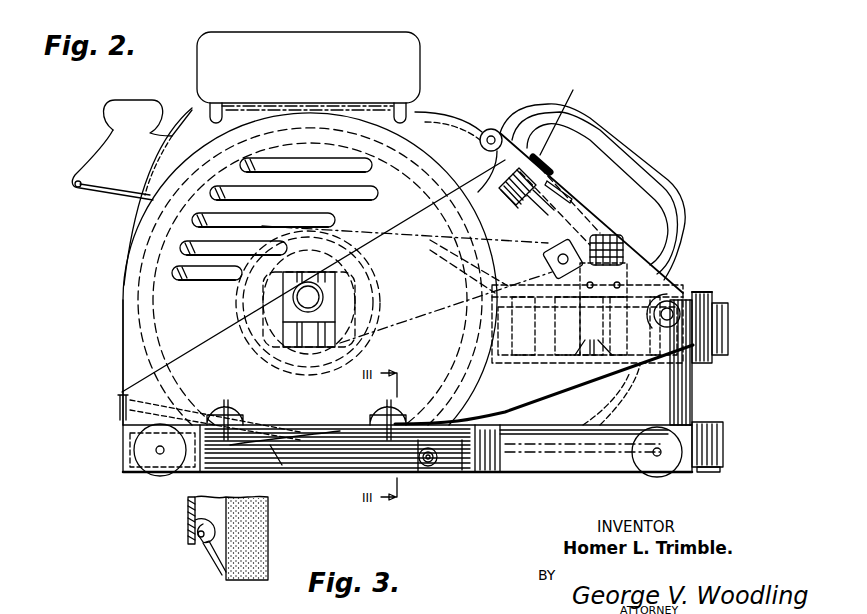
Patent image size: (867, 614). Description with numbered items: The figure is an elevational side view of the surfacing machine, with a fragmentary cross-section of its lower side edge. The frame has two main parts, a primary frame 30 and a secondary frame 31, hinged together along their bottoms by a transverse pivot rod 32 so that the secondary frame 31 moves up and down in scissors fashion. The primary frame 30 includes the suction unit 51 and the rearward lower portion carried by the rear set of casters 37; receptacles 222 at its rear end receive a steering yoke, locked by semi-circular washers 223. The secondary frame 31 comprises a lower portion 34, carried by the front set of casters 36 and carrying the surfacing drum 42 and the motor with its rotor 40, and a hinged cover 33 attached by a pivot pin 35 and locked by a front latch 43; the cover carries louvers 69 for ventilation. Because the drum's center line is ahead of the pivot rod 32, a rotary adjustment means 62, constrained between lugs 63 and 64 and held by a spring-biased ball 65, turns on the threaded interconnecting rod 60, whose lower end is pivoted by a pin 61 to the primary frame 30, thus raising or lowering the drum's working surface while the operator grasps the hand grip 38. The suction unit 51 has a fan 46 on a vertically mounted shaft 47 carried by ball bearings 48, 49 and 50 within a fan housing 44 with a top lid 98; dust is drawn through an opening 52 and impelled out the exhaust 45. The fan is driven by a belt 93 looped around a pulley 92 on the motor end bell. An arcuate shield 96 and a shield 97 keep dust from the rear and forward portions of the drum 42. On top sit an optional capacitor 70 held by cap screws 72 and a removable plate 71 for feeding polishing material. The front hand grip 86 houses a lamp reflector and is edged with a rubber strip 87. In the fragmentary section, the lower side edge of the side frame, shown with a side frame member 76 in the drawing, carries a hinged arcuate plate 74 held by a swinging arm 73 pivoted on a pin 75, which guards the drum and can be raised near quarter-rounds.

In FIG. 2, the primary frame 30 is at (690, 396).
In FIG. 2, the secondary frame 31 is at (132, 352).
In FIG. 2, the transverse pivot rod 32 is at (428, 468).
In FIG. 2, the hinged cover 33 is at (204, 308).
In FIG. 2, the lower portion of the secondary frame 34 is at (426, 286).
In FIG. 2, the pivot pin 35 is at (493, 130).
In FIG. 2, the front set of casters 36 is at (156, 474).
In FIG. 2, the rear set of casters 37 is at (668, 478).
In FIG. 2, the hand grip 38 is at (640, 124).
In FIG. 2, the rotor 40 is at (157, 300).
In FIG. 2, the surfacing drum 42 is at (138, 266).
In FIG. 2, the front latch 43 is at (118, 406).
In FIG. 2, the fan housing 44 is at (710, 298).
In FIG. 2, the exhaust 45 is at (728, 320).
In FIG. 2, the fan 46 is at (528, 360).
In FIG. 2, the vertically mounted shaft 47 is at (605, 376).
In FIG. 2, the anti-friction ball bearing 48 is at (645, 392).
In FIG. 2, the anti-friction ball bearing 49 is at (618, 292).
In FIG. 2, the anti-friction ball bearing 50 is at (578, 274).
In FIG. 2, the suction unit 51 is at (764, 346).
In FIG. 2, the opening 52 is at (570, 362).
In FIG. 2, the interconnecting rod 60 is at (560, 218).
In FIG. 2, the pin 61 is at (672, 310).
In FIG. 2, the rotary adjustment means 62 is at (536, 165).
In FIG. 2, the lug 63 is at (553, 200).
In FIG. 2, the lug 64 is at (576, 84).
In FIG. 2, the ball 65 is at (545, 170).
In FIG. 2, the louvers 69 is at (360, 202).
In FIG. 2, the capacitor 70 is at (418, 60).
In FIG. 2, the removable plate 71 is at (392, 86).
In FIG. 2, the cap screws 72 is at (198, 108).
In FIG. 2, the swinging arm 73 is at (462, 470).
In FIG. 3, the swinging arm 73 is at (207, 548).
In FIG. 2, the arcuate plate 74 is at (345, 462).
In FIG. 3, the arcuate plate 74 is at (222, 579).
In FIG. 2, the pin 75 is at (262, 400).
In FIG. 3, the pin 75 is at (196, 530).
In FIG. 3, the side plate 76 is at (188, 509).
In FIG. 2, the front hand grip 86 is at (124, 114).
In FIG. 2, the rubber strip 87 is at (74, 182).
In FIG. 2, the pulley 92 is at (252, 345).
In FIG. 2, the belt 93 is at (420, 333).
In FIG. 2, the arcuate shield 96 is at (520, 265).
In FIG. 2, the shield 97 is at (238, 462).
In FIG. 2, the top lid 98 is at (700, 290).
In FIG. 2, the receptacles 222 is at (724, 440).
In FIG. 2, the semi-circular washer 223 is at (718, 470).